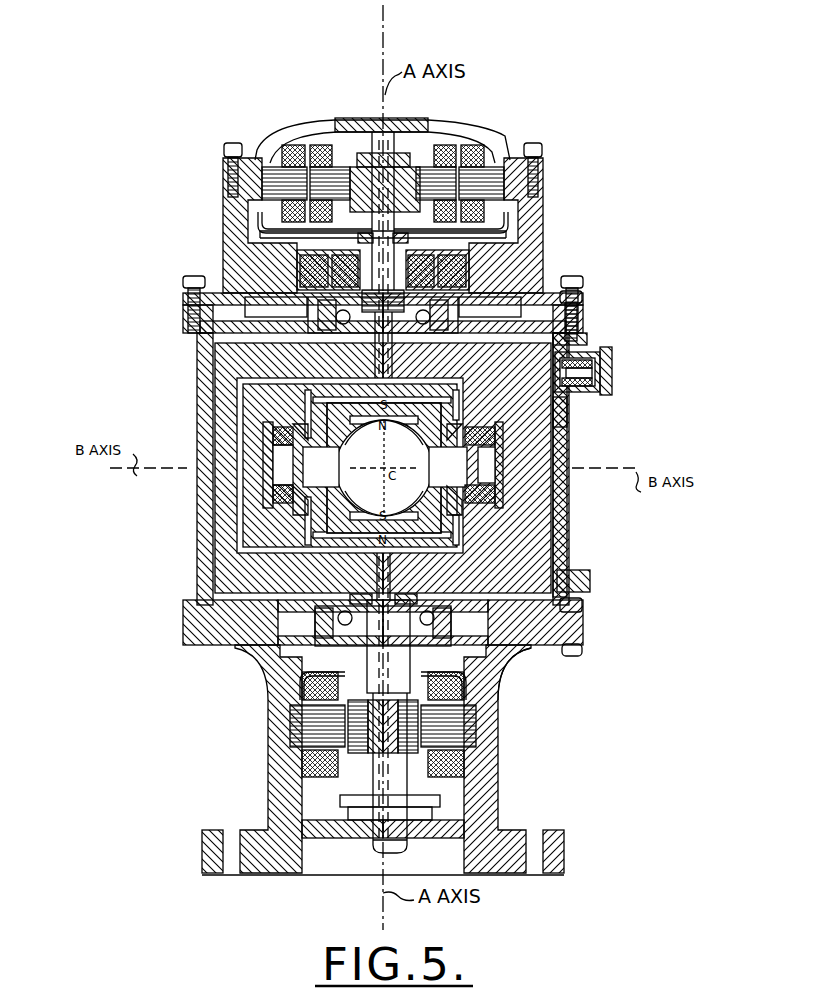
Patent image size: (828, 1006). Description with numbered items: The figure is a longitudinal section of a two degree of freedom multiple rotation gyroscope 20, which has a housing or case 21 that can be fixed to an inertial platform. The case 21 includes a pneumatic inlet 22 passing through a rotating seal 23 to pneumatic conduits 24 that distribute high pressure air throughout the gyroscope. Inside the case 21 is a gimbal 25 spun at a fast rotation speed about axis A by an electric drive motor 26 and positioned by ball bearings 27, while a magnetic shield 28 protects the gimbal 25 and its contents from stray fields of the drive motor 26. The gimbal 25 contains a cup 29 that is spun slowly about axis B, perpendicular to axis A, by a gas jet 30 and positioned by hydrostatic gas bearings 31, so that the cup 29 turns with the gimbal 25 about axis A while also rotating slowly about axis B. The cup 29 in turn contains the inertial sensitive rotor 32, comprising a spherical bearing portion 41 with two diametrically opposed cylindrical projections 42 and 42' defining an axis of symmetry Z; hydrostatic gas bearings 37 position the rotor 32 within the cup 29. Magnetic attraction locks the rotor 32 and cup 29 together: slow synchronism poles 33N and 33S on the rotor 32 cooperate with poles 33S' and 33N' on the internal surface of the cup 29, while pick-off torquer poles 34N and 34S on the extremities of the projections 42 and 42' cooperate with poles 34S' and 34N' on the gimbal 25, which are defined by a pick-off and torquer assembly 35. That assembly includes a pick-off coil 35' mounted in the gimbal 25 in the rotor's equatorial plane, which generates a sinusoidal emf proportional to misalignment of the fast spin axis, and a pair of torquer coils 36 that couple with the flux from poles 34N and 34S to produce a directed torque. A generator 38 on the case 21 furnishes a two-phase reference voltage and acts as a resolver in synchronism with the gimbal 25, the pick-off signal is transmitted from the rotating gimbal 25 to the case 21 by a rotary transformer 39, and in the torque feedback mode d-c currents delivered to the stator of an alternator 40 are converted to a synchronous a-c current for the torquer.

The two degree of freedom multiple rotation gyroscope 20 is at (586, 339).
The housing or case 21 is at (567, 541).
The pneumatic inlet 22 is at (407, 846).
The rotating seal 23 is at (440, 790).
The pneumatic conduits 24 is at (460, 553).
The gimbal 25 is at (500, 490).
The electric drive motor 26 is at (490, 712).
The ball bearings 27 is at (335, 317).
The magnetic shield 28 is at (300, 690).
The cup 29 is at (545, 410).
The gas jet 30 is at (372, 560).
The hydrostatic gas bearings 31 is at (258, 391).
The rotor 32 is at (288, 506).
The magnetic pole 33S' is at (364, 433).
The slow synchronism magnetic pole 33N is at (403, 434).
The magnetic pole 33N' is at (364, 500).
The slow synchronism magnetic pole 33S is at (403, 501).
The pick-off torquer magnetic pole 34N is at (336, 467).
The pick-off torquer magnetic pole 34S is at (432, 467).
The magnetic pole 34S' is at (219, 460).
The magnetic pole 34N' is at (555, 465).
The pick-off and torquer assembly 35 is at (225, 459).
The pick-off coil 35' is at (542, 502).
The torquer coils 36 is at (265, 490).
The hydrostatic gas bearings 37 is at (440, 335).
The generator 38 is at (614, 376).
The rotary transformer 39 is at (470, 290).
The alternator 40 is at (480, 156).
The spherical bearing portion 41 is at (462, 512).
The cylindrical projection 42 is at (287, 418).
The cylindrical projection 42' is at (471, 418).